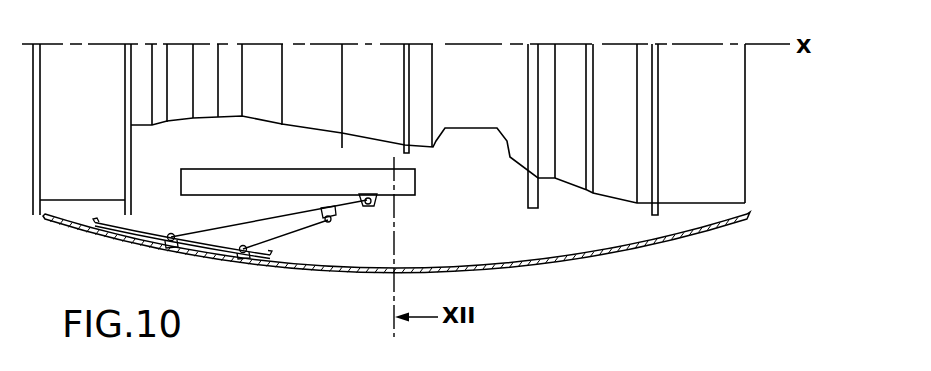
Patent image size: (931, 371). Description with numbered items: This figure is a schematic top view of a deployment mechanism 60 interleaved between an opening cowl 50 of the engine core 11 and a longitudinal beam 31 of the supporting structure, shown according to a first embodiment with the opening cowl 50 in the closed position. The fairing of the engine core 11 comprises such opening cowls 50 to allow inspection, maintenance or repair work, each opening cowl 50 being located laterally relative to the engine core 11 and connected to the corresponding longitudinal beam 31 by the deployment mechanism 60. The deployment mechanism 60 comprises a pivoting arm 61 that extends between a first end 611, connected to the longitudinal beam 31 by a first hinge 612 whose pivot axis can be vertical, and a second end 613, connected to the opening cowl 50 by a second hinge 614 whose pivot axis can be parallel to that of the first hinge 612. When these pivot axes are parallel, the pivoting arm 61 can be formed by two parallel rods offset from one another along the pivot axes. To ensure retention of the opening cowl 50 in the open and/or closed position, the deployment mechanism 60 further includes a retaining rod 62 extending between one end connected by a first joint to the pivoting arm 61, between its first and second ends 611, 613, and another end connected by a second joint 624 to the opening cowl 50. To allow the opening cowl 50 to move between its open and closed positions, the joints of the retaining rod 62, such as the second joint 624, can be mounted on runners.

The engine core 11 is at (477, 62).
The longitudinal beam 31 is at (256, 181).
The opening cowl 50 is at (562, 263).
The deployment mechanism 60 is at (268, 251).
The pivoting arm 61 is at (240, 225).
The first end 611 is at (340, 211).
The first hinge 612 is at (378, 209).
The second end 613 is at (194, 252).
The second hinge 614 is at (172, 255).
The retaining rod 62 is at (285, 237).
The second joint 624 is at (245, 256).